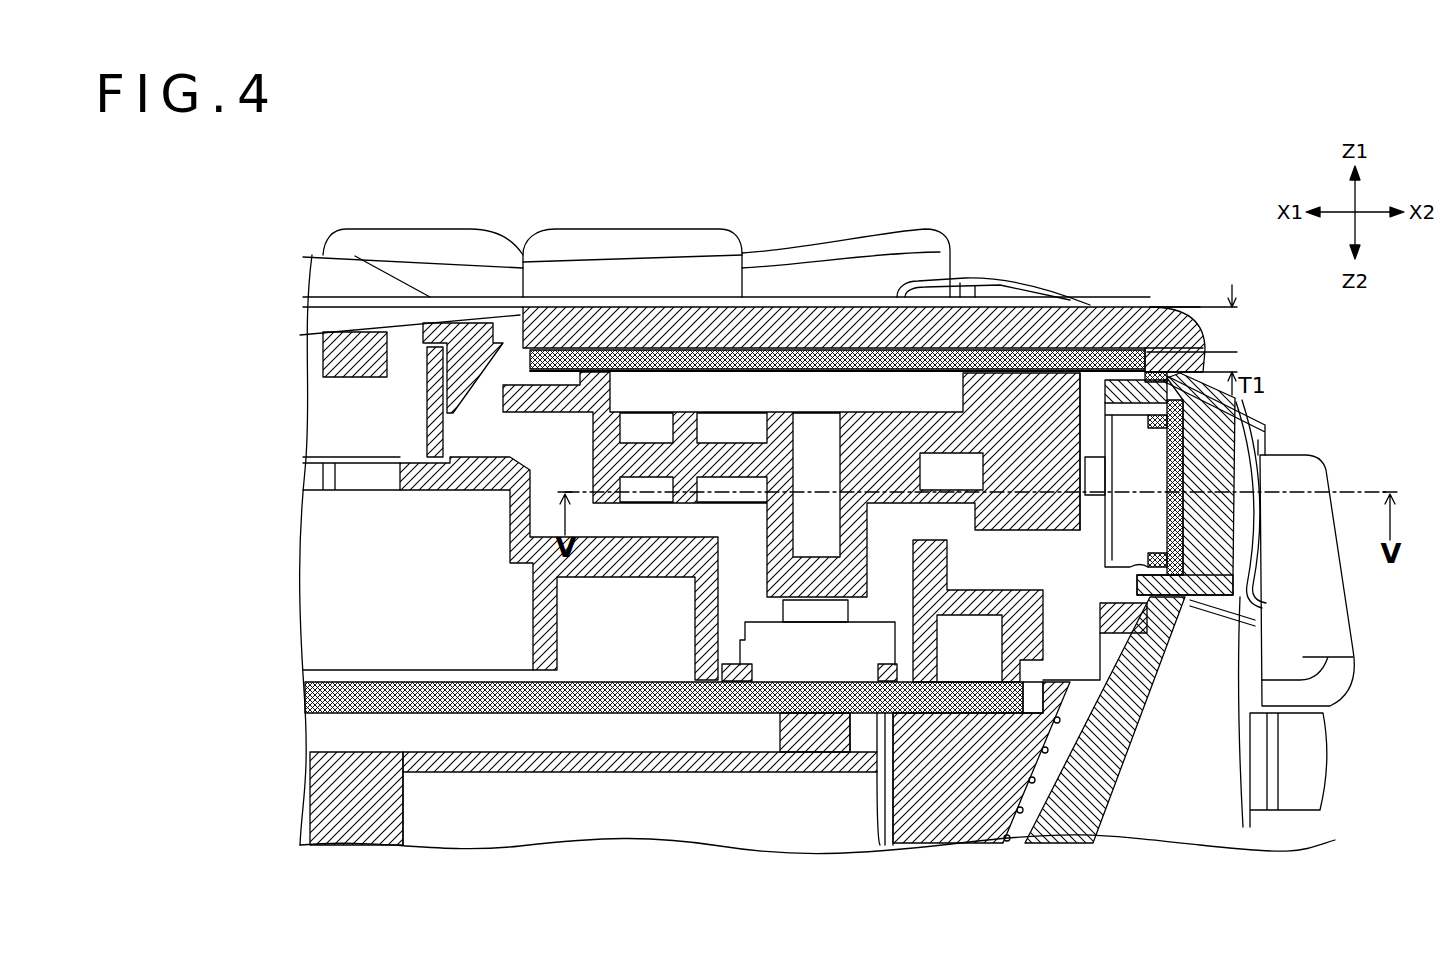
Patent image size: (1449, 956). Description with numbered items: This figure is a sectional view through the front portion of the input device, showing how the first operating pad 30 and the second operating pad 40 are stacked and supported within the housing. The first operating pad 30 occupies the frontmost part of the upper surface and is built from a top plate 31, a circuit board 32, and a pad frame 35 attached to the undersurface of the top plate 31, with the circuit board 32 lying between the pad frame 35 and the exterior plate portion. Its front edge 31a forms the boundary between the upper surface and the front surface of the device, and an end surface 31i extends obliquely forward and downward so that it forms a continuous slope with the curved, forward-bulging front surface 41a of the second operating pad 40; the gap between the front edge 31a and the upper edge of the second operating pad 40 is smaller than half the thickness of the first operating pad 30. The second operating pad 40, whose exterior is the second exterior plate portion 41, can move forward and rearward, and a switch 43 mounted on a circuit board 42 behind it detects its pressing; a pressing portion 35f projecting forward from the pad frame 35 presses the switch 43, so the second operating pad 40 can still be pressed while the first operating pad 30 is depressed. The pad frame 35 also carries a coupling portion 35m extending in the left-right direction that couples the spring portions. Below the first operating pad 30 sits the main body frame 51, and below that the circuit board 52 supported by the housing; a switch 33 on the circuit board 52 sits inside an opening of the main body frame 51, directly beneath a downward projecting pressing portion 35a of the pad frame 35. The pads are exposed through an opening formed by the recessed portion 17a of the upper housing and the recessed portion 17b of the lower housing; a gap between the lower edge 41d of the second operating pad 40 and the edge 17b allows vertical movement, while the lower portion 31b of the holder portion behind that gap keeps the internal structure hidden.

The recessed portion 17a is at (474, 325).
The recessed portion 17b is at (1168, 612).
The first operating pad 30 is at (854, 363).
The top plate 31 is at (770, 297).
The front edge 31a is at (1178, 305).
The end surface 31i is at (1192, 336).
The lower portion 31b is at (1105, 607).
The circuit board 32 is at (864, 358).
The pad frame 35 is at (750, 172).
The pressing portion 35a is at (880, 570).
The pressing portion 35f is at (1082, 405).
The coupling portion 35m is at (1152, 377).
The second operating pad 40 is at (1239, 560).
The second exterior plate portion 41 is at (1210, 397).
The front surface 41a is at (1243, 504).
The lower edge 41d is at (1190, 598).
The circuit board 42 is at (1181, 432).
The switch 43 is at (1135, 474).
The main body frame 51 is at (609, 599).
The circuit board 52 is at (677, 714).
The switch 33 is at (815, 657).